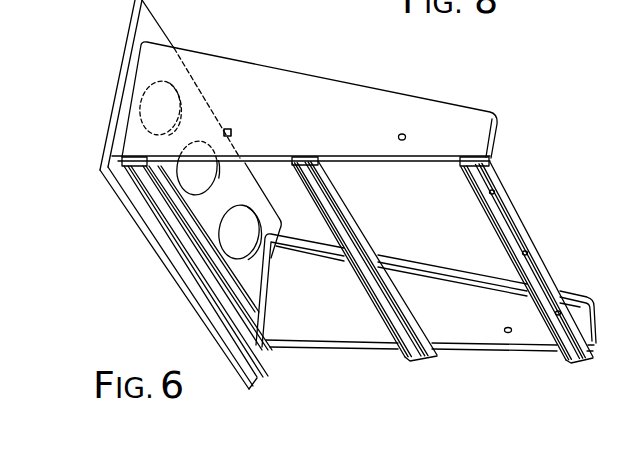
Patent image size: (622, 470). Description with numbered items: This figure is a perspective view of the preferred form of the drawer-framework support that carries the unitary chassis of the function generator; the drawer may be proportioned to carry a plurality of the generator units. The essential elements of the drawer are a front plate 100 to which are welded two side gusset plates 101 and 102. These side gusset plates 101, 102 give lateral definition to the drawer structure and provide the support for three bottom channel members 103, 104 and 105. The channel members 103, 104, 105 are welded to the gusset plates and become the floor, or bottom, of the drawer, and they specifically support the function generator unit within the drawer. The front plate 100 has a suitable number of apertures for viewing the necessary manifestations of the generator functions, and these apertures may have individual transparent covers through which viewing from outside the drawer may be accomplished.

The front plate 100 is at (130, 28).
The side gusset plate 101 is at (265, 64).
The side gusset plate 102 is at (413, 260).
The bottom channel member 103 is at (526, 224).
The bottom channel member 104 is at (353, 211).
The bottom channel member 105 is at (207, 290).